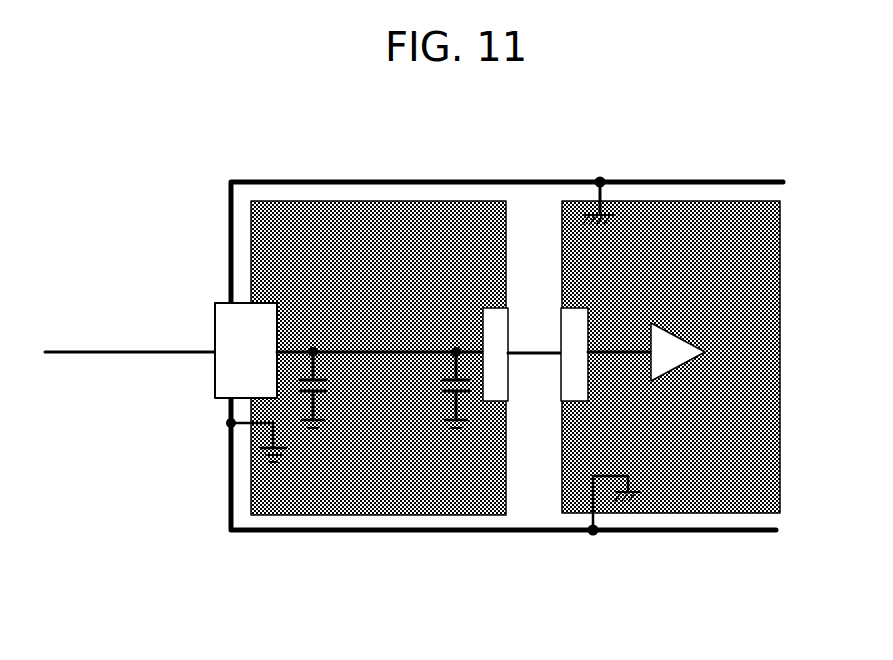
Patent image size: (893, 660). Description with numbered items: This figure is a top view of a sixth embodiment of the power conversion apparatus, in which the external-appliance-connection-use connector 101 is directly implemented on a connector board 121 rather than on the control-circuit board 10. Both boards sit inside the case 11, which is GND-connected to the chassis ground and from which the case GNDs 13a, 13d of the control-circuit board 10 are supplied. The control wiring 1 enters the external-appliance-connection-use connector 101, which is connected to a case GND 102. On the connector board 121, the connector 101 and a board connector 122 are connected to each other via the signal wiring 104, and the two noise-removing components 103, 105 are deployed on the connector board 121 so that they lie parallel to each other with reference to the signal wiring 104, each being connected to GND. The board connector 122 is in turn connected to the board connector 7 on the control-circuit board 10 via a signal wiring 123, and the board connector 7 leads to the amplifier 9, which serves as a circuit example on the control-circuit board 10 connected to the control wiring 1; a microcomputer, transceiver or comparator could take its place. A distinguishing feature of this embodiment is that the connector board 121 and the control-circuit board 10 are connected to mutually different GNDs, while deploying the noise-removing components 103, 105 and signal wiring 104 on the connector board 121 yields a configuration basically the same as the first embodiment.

The control wiring 1 is at (126, 387).
The external-appliance-connection-use connector 101 is at (197, 310).
The case GND 102 is at (211, 467).
The noise-removing component 103 is at (343, 418).
The signal wiring 104 is at (380, 319).
The noise-removing component 105 is at (434, 418).
The connector board 121 is at (378, 311).
The board connector 122 is at (474, 315).
The signal wiring 123 is at (534, 388).
The board connector 7 is at (566, 317).
The amplifier 9 is at (694, 309).
The control-circuit board 10 is at (690, 382).
The case 11 is at (507, 407).
The case GND 13a is at (644, 159).
The case GND 13d is at (620, 468).